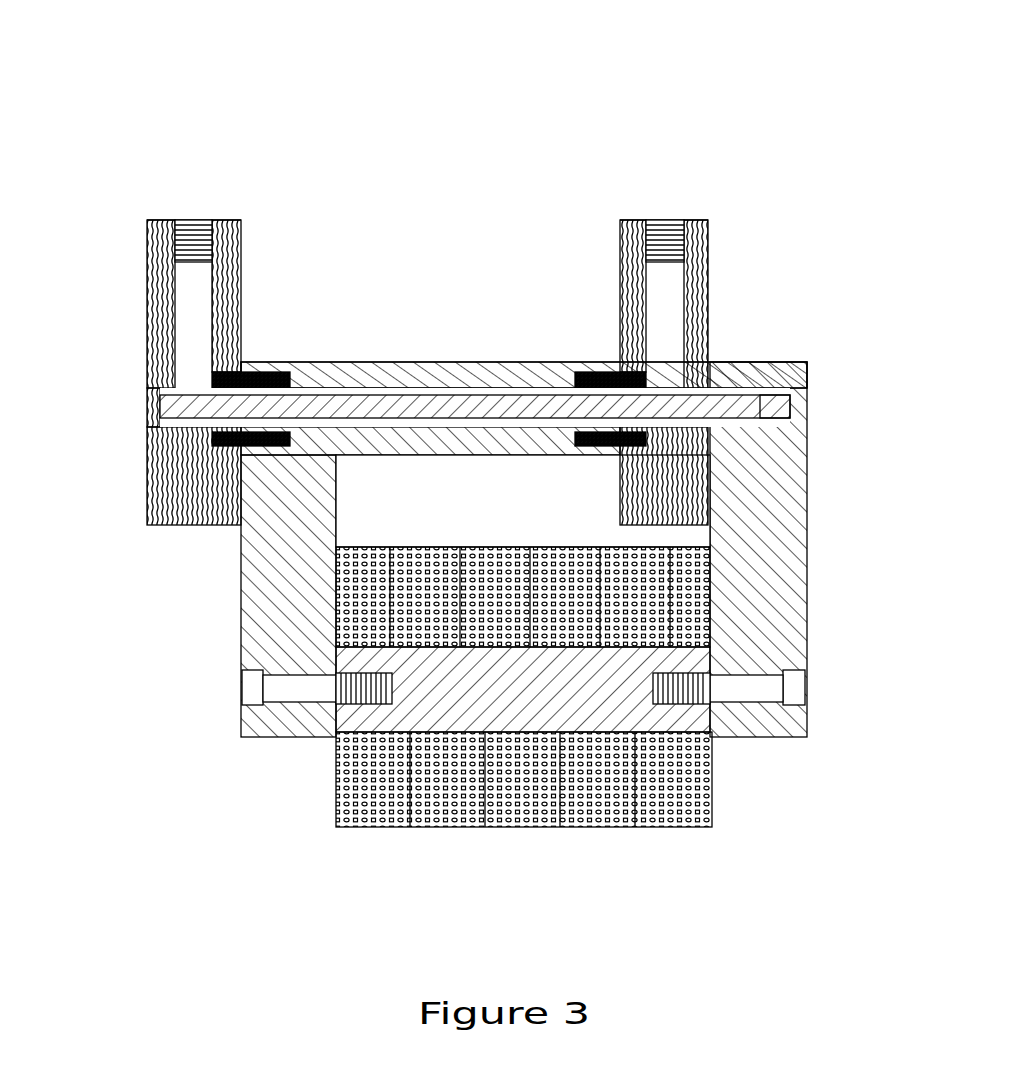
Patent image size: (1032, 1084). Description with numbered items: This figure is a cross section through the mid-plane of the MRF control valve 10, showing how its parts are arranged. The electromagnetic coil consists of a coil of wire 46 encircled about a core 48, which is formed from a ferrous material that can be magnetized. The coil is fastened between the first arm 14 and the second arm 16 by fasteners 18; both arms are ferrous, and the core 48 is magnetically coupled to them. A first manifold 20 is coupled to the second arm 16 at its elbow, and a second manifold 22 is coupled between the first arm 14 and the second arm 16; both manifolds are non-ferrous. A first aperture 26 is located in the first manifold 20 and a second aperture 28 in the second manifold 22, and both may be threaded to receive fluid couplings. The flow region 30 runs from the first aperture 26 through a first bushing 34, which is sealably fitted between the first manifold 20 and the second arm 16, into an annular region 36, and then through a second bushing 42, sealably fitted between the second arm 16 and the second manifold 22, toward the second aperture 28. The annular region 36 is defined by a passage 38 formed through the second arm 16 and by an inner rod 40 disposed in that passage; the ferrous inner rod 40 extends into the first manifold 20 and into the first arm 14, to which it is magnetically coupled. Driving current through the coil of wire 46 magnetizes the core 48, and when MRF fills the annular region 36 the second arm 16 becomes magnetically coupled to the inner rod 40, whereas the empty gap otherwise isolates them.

The MRF control valve 10 is at (507, 96).
The first arm 14 is at (808, 560).
The second arm 16 is at (240, 565).
The fasteners 18 is at (255, 692).
The first manifold 20 is at (148, 328).
The second manifold 22 is at (705, 300).
The first aperture 26 is at (178, 222).
The second aperture 28 is at (668, 222).
The flow region 30 is at (540, 388).
The first bushing 34 is at (270, 364).
The annular region 36 is at (165, 393).
The passage 38 is at (440, 386).
The inner rod 40 is at (786, 415).
The second bushing 42 is at (605, 378).
The coil of wire 46 is at (607, 797).
The core 48 is at (620, 708).